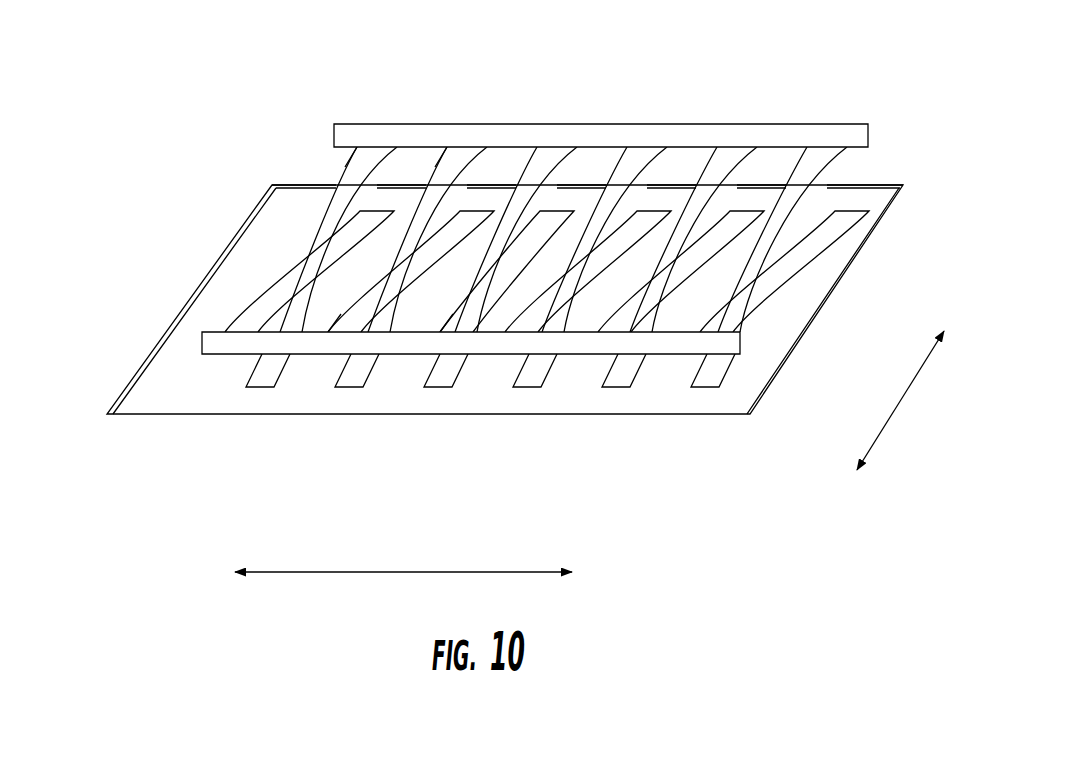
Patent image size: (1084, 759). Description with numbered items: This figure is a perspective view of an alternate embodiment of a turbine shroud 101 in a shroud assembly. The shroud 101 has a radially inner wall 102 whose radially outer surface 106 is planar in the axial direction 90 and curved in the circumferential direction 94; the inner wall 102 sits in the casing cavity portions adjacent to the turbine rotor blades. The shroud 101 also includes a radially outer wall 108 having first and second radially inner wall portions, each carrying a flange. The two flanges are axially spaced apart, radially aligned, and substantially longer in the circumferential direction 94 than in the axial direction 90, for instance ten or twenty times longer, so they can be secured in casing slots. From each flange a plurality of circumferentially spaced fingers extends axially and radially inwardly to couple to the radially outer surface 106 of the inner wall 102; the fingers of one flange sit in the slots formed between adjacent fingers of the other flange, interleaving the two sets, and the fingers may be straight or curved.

The shroud 101 is at (504, 258).
The radially inner wall 102 is at (177, 394).
The radially outer surface 106 is at (293, 252).
The radially outer wall 108 is at (564, 258).
The axial direction 90 is at (909, 393).
The circumferential direction 94 is at (422, 573).